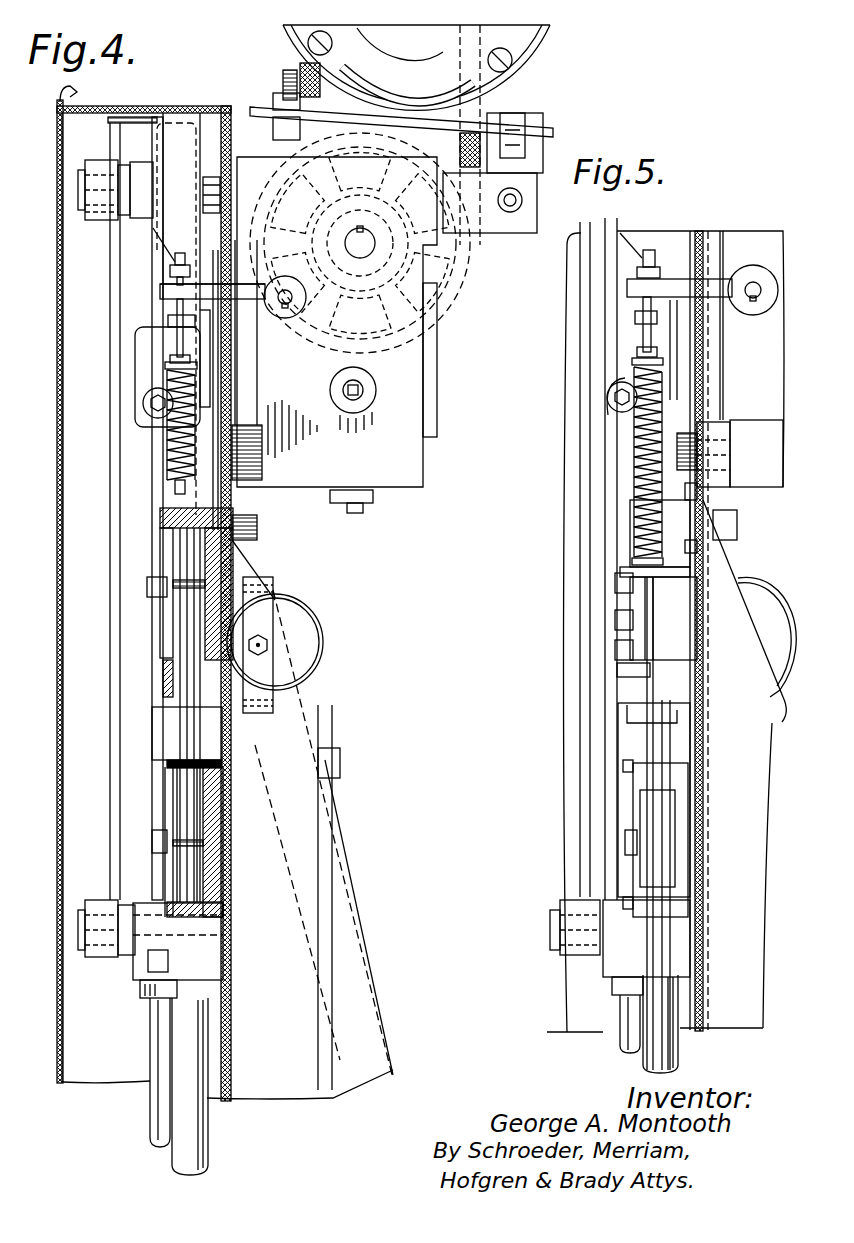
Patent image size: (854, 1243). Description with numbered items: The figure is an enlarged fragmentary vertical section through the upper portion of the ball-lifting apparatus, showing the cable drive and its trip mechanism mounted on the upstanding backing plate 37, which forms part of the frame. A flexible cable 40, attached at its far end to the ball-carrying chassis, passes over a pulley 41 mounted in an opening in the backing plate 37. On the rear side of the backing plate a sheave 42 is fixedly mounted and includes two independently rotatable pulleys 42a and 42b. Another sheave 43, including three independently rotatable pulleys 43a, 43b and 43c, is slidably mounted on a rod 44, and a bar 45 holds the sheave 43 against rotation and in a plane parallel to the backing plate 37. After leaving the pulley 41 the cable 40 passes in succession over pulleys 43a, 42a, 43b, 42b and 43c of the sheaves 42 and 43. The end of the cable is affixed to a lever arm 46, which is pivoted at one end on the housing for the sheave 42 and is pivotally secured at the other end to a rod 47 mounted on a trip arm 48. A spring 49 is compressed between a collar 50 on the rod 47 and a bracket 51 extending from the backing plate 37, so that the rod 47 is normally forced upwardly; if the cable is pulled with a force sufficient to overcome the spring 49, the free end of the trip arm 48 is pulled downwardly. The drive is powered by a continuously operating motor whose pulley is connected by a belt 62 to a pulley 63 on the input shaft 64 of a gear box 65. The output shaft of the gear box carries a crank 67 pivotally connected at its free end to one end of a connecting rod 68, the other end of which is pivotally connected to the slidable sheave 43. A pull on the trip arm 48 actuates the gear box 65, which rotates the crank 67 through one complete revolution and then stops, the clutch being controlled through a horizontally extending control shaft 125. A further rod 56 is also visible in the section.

In FIG. 4, the backing plate 37 is at (240, 1003).
In FIG. 5, the backing plate 37 is at (705, 730).
In FIG. 4, the flexible cable 40 is at (320, 698).
In FIG. 5, the flexible cable 40 is at (788, 735).
In FIG. 4, the pulley 41 is at (305, 630).
In FIG. 4, the sheave 42 is at (169, 558).
In FIG. 5, the sheave 42 is at (620, 609).
In FIG. 4, the pulley 42a is at (186, 626).
In FIG. 4, the pulley 42b is at (178, 532).
In FIG. 4, the sheave 43 is at (141, 809).
In FIG. 5, the sheave 43 is at (625, 868).
In FIG. 4, the pulley 43a is at (196, 878).
In FIG. 4, the pulley 43b is at (185, 820).
In FIG. 4, the pulley 43c is at (170, 790).
In FIG. 4, the rod 44 is at (205, 1141).
In FIG. 5, the rod 44 is at (680, 1052).
In FIG. 5, the bar 45 is at (655, 948).
In FIG. 5, the lever arm 46 is at (630, 666).
In FIG. 4, the rod 47 is at (178, 482).
In FIG. 5, the rod 47 is at (640, 333).
In FIG. 4, the trip arm 48 is at (201, 290).
In FIG. 5, the trip arm 48 is at (665, 280).
In FIG. 4, the spring 49 is at (167, 456).
In FIG. 5, the spring 49 is at (640, 455).
In FIG. 4, the collar 50 is at (166, 358).
In FIG. 5, the collar 50 is at (632, 356).
In FIG. 5, the bracket 51 is at (636, 570).
In FIG. 4, the rod 56 is at (150, 1105).
In FIG. 5, the rod 56 is at (620, 1040).
In FIG. 4, the belt 62 is at (510, 79).
In FIG. 4, the pulley 63 is at (462, 270).
In FIG. 4, the input shaft 64 is at (308, 315).
In FIG. 4, the gear box 65 is at (410, 471).
In FIG. 5, the gear box 65 is at (768, 480).
In FIG. 4, the crank 67 is at (140, 272).
In FIG. 5, the crank 67 is at (617, 224).
In FIG. 4, the connecting rod 68 is at (110, 540).
In FIG. 4, the control shaft 125 is at (283, 312).
In FIG. 5, the control shaft 125 is at (751, 282).